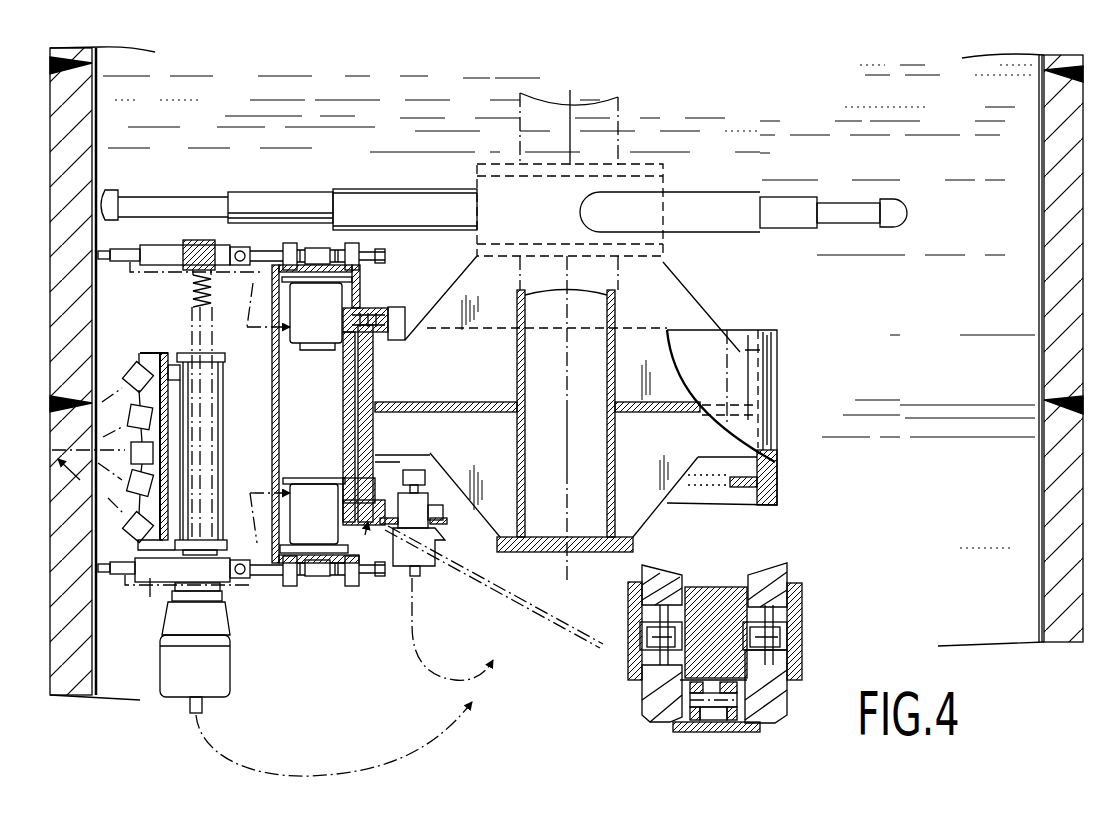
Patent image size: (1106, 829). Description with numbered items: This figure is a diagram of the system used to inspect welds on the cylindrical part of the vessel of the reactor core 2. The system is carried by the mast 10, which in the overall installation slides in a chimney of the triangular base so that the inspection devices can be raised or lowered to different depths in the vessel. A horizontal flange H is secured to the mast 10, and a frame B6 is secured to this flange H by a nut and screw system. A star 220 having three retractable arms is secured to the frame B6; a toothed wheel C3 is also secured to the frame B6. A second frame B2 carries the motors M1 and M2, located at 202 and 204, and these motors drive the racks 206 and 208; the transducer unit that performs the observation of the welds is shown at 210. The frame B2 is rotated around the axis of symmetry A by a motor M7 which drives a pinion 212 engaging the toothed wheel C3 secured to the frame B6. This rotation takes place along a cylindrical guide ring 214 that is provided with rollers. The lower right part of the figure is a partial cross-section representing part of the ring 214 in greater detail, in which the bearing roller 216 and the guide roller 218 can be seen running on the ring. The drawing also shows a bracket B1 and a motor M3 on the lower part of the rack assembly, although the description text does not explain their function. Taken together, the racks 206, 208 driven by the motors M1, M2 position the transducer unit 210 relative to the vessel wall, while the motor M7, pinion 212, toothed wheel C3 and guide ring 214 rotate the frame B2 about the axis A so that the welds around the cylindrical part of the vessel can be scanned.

The reactor core 2 is at (1050, 300).
The mast 10 is at (620, 127).
The horizontal flange H is at (668, 185).
The star having three retractable arms 220 is at (720, 230).
The rack 206 is at (270, 250).
The transducer unit 210 is at (165, 353).
The rack 208 is at (262, 570).
The bracket B1 is at (126, 607).
The frame B2 is at (272, 418).
The motor M1 is at (318, 322).
The motor M2 is at (317, 526).
The motor M3 is at (198, 674).
The motor 204 is at (299, 333).
The motor 202 is at (299, 494).
The cylindrical guide ring 214 is at (376, 386).
The toothed wheel C3 is at (402, 475).
The pinion 212 is at (432, 549).
The motor M7 is at (400, 563).
The axis of symmetry A is at (565, 423).
The frame B6 is at (660, 345).
The guide roller 218 is at (645, 633).
The bearing roller 216 is at (680, 630).